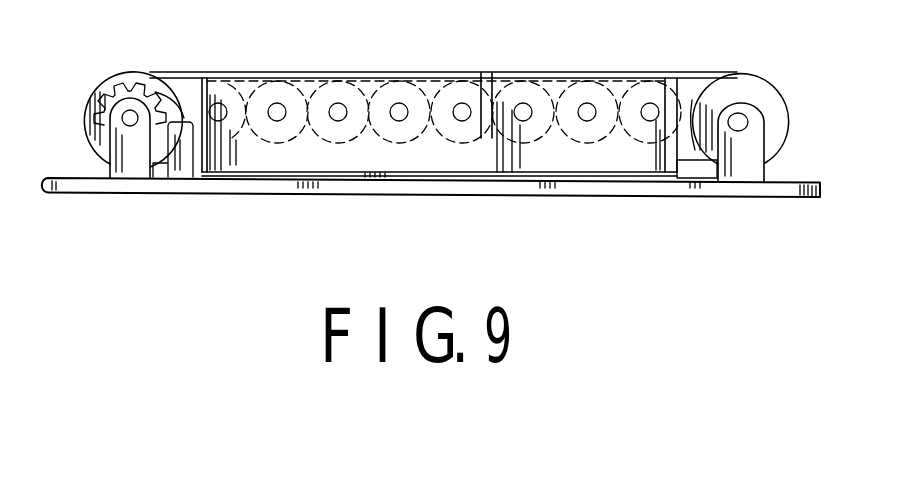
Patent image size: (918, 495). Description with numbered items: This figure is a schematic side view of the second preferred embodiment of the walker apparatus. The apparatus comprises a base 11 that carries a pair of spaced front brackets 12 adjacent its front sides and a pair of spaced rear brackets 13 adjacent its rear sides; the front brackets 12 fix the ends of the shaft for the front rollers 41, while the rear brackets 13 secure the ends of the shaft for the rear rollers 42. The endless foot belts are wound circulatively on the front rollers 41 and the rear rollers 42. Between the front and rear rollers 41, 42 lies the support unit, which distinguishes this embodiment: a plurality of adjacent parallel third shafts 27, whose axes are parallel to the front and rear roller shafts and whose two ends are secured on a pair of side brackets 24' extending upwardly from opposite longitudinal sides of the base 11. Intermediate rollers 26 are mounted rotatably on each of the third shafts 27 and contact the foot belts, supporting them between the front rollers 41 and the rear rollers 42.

The base 11 is at (265, 183).
The front bracket 12 is at (112, 164).
The rear bracket 13 is at (745, 165).
The side bracket 24' is at (443, 161).
The intermediate left roller 26 is at (308, 88).
The third shaft 27 is at (587, 112).
The front roller 41 is at (125, 78).
The rear roller 42 is at (753, 88).